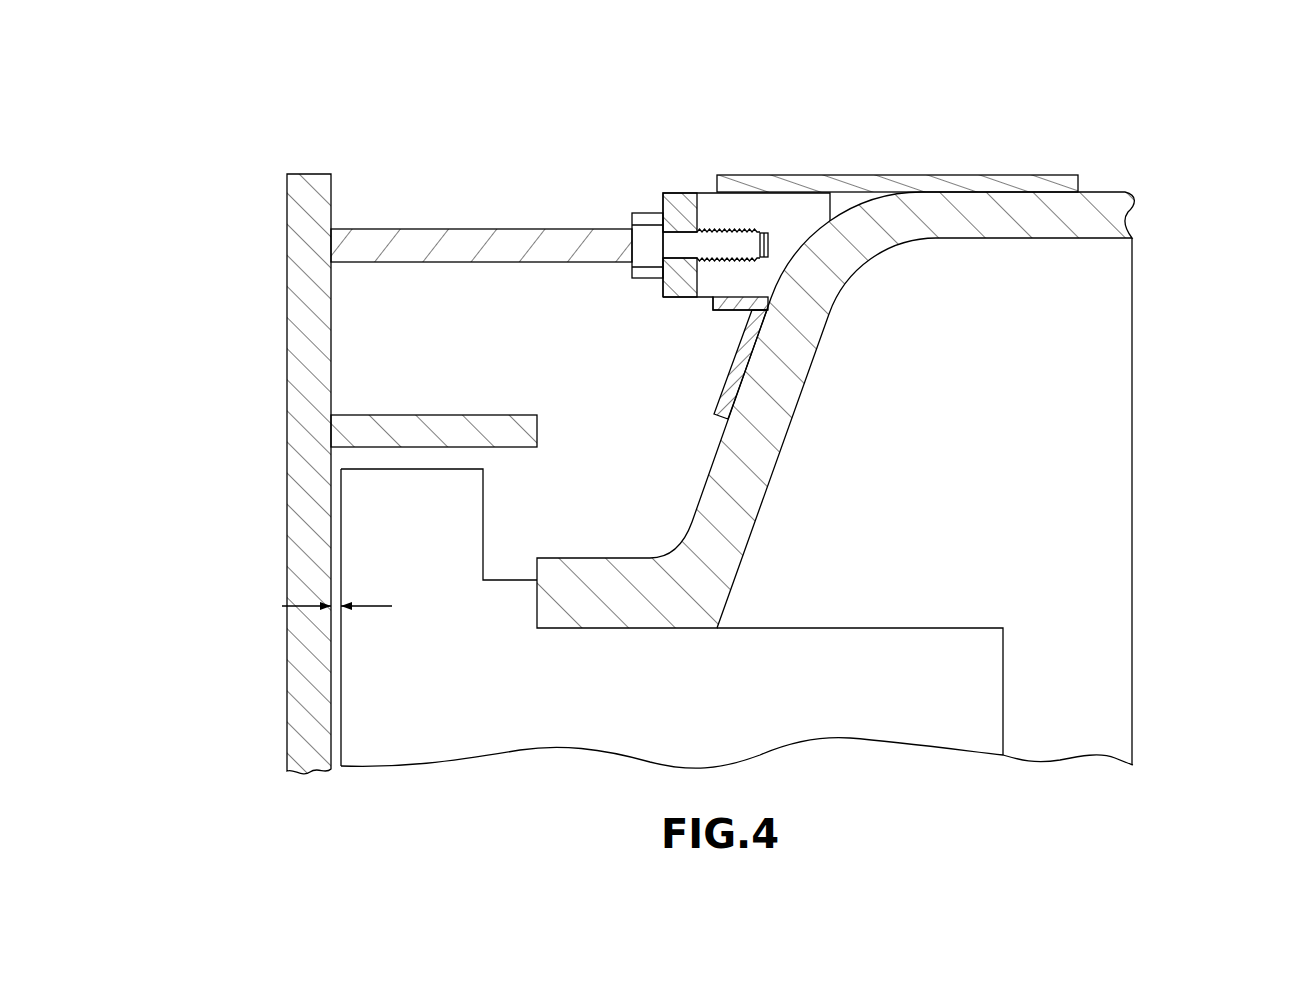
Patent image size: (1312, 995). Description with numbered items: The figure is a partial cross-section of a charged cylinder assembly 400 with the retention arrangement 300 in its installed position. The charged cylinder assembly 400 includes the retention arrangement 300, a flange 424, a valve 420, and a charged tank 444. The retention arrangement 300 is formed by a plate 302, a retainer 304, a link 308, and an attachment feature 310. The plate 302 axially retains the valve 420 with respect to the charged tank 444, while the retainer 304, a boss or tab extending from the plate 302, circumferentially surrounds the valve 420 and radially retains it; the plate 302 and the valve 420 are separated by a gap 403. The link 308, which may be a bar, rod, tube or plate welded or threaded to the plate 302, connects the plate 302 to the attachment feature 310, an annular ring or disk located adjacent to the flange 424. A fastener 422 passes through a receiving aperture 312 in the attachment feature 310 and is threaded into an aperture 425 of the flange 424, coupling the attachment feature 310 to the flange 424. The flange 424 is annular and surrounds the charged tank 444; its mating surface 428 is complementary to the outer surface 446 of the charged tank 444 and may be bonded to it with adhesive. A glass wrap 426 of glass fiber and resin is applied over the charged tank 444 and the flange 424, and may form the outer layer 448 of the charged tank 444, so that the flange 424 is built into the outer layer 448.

The retention arrangement 300 is at (228, 140).
The plate 302 is at (287, 305).
The retainer 304 is at (537, 430).
The link 308 is at (455, 230).
The attachment feature 310 is at (680, 193).
The receiving aperture 312 is at (690, 254).
The charged cylinder assembly 400 is at (1206, 136).
The gap 403 is at (334, 605).
The valve 420 is at (408, 750).
The fastener 422 is at (632, 268).
The flange 424 is at (790, 217).
The aperture 425 is at (780, 290).
The glass wrap 426 is at (988, 175).
The mating surface 428 is at (806, 253).
The charged tank 444 is at (939, 450).
The outer surface 446 is at (825, 222).
The outer layer 448 is at (1097, 203).